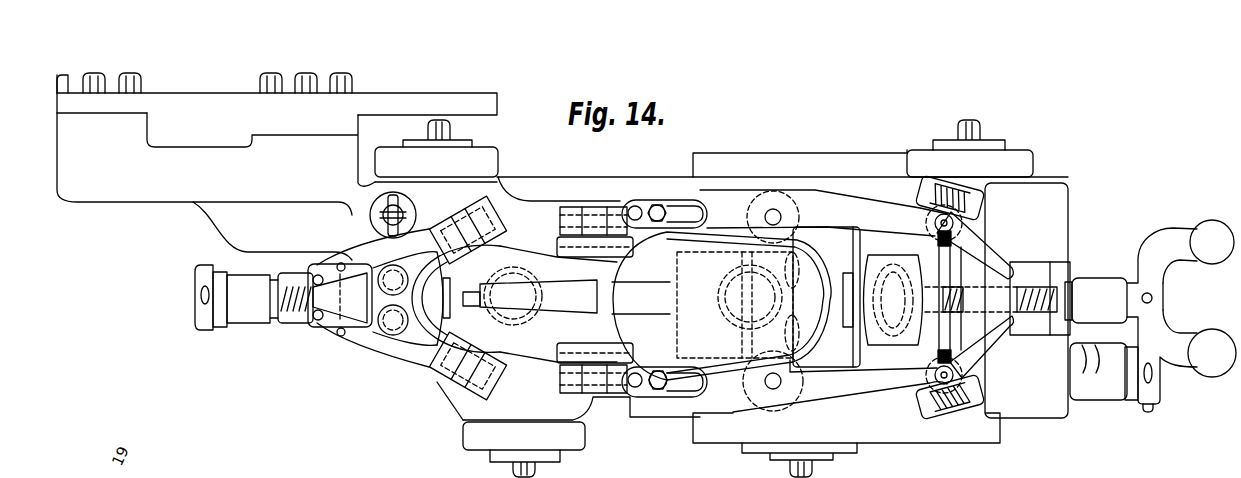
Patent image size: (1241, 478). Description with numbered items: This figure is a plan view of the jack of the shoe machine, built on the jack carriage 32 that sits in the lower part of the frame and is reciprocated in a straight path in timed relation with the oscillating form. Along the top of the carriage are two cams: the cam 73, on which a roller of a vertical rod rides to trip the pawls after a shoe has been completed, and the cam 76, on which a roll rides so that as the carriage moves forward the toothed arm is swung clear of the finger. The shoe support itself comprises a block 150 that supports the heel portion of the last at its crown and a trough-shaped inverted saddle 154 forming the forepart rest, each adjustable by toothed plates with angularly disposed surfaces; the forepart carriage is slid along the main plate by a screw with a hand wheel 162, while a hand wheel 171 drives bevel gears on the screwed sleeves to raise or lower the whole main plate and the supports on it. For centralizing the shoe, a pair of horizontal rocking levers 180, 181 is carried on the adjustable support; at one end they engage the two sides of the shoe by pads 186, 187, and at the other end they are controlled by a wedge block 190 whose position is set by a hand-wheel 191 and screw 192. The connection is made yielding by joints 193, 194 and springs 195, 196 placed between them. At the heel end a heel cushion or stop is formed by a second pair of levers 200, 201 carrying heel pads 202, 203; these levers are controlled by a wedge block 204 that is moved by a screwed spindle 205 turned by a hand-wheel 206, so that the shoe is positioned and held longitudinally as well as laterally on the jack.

The jack carriage 32 is at (121, 190).
The cam 73 is at (317, 125).
The cam 76 is at (216, 105).
The block 150 is at (567, 303).
The inverted saddle 154 is at (687, 322).
The hand wheel 162 is at (1147, 384).
The hand wheel 171 is at (1173, 367).
The horizontal rocking lever 180 is at (877, 390).
The horizontal rocking lever 181 is at (845, 203).
The pad 186 is at (573, 353).
The pad 187 is at (562, 240).
The wedge block 190 is at (997, 283).
The hand-wheel 191 is at (1152, 285).
The screw 192 is at (1050, 287).
The joint 193 is at (955, 376).
The joint 194 is at (954, 226).
The spring 195 is at (953, 410).
The spring 196 is at (948, 215).
The lever 200 is at (400, 340).
The lever 201 is at (362, 262).
The heel pad 202 is at (572, 337).
The heel pad 203 is at (557, 247).
The wedge block 204 is at (333, 299).
The screwed spindle 205 is at (285, 315).
The hand-wheel 206 is at (227, 330).